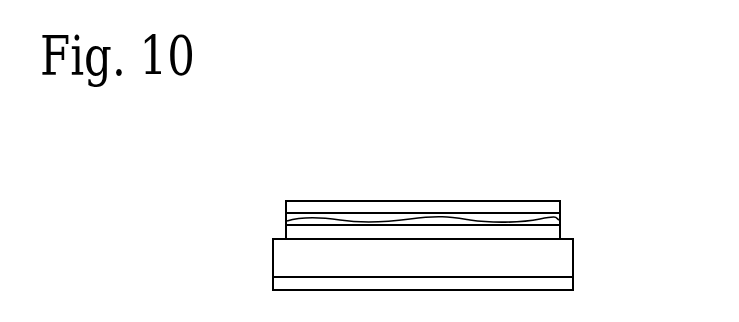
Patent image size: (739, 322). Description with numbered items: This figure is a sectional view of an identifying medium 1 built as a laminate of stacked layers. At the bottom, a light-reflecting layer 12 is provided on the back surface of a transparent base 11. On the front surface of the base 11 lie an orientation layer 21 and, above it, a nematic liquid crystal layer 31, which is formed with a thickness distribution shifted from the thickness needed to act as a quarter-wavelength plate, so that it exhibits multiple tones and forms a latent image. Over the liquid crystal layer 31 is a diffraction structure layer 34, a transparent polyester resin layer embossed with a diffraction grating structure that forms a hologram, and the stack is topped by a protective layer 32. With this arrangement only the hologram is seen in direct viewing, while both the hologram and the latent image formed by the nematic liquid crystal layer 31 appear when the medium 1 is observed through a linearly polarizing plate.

The identifying medium 1 is at (540, 185).
The base 11 is at (555, 260).
The light-reflecting layer 12 is at (565, 288).
The orientation layer 21 is at (550, 236).
The nematic liquid crystal layer 31 is at (470, 228).
The protective layer 32 is at (310, 210).
The diffraction structure layer 34 is at (385, 218).